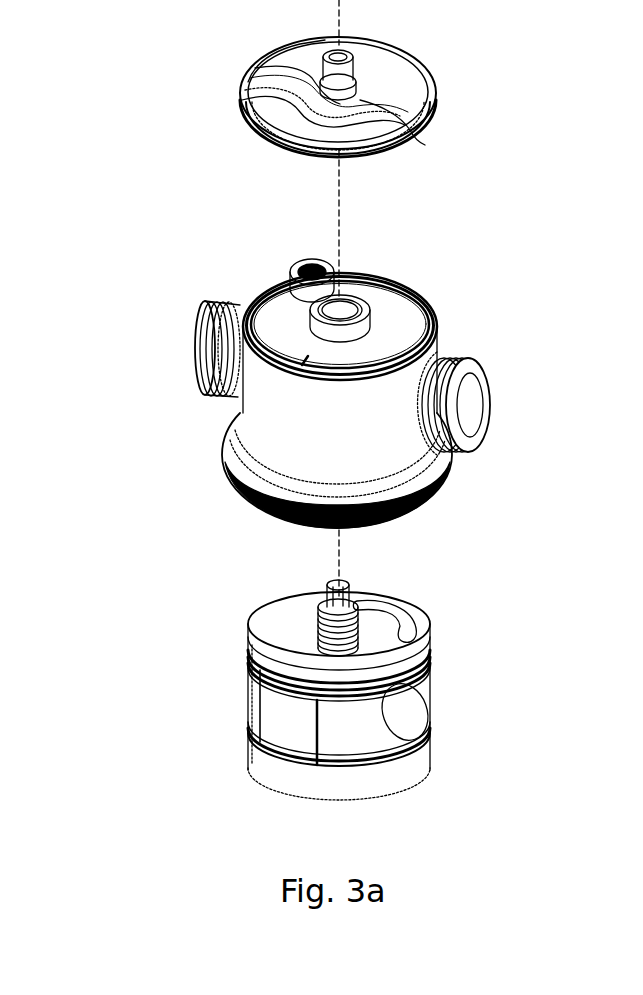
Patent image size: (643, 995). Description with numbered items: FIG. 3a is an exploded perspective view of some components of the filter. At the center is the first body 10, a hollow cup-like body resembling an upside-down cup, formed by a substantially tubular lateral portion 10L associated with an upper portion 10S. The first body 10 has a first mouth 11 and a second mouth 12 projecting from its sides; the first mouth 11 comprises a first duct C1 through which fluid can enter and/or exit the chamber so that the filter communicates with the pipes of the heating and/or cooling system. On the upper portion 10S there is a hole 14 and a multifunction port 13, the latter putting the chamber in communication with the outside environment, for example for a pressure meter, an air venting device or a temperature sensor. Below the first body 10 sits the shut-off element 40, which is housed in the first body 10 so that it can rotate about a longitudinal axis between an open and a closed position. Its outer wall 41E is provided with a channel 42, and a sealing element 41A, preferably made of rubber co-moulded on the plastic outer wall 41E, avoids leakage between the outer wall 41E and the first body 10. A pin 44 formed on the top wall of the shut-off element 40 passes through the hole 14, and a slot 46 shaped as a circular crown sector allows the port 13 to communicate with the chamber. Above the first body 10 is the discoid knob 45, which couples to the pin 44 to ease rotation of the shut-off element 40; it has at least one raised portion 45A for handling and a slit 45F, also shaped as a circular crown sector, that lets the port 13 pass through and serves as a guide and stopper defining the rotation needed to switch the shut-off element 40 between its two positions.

The first body 10 is at (310, 305).
The upper portion 10S is at (390, 320).
The lateral portion 10L is at (270, 435).
The first mouth 11 is at (474, 376).
The second mouth 12 is at (212, 308).
The port 13 is at (300, 258).
The hole 14 is at (352, 305).
The first duct C1 is at (463, 408).
The shut-off element 40 is at (324, 686).
The sealing element 41A is at (367, 727).
The outer wall 41E is at (260, 758).
The channel 42 is at (403, 714).
The pin 44 is at (322, 600).
The slot 46 is at (393, 627).
The knob 45 is at (423, 86).
The raised portion 45A is at (282, 50).
The slit 45F is at (248, 118).